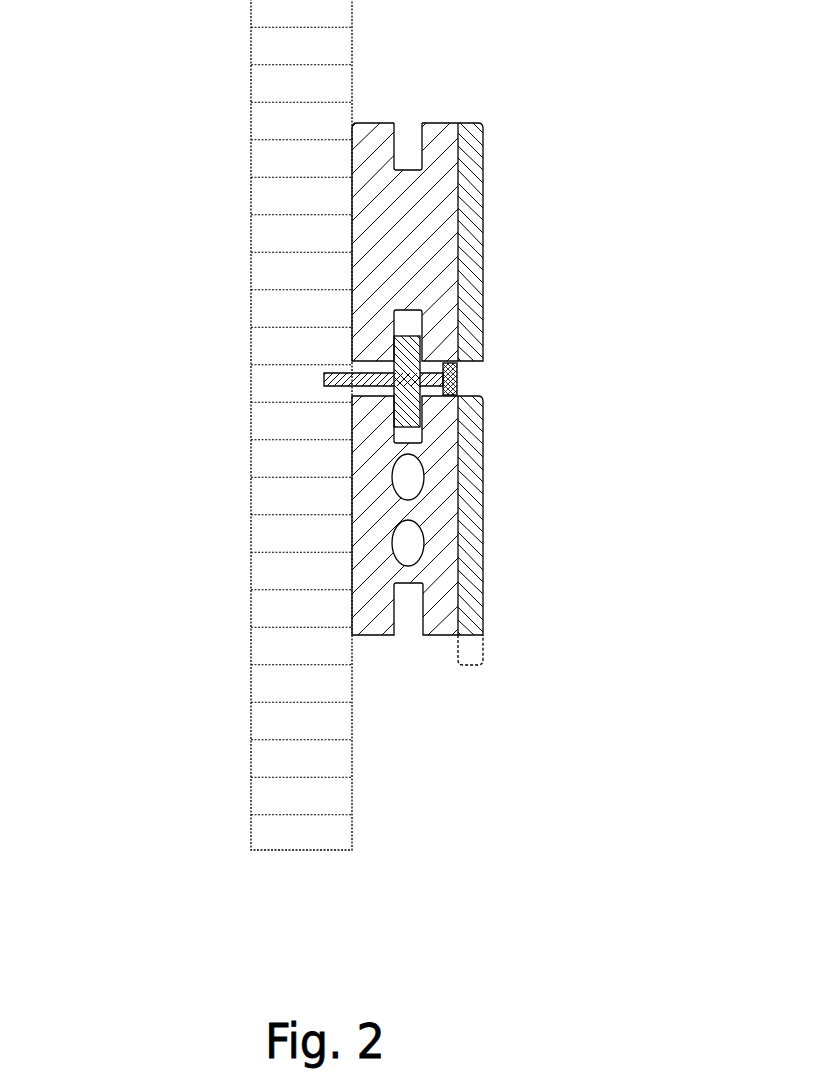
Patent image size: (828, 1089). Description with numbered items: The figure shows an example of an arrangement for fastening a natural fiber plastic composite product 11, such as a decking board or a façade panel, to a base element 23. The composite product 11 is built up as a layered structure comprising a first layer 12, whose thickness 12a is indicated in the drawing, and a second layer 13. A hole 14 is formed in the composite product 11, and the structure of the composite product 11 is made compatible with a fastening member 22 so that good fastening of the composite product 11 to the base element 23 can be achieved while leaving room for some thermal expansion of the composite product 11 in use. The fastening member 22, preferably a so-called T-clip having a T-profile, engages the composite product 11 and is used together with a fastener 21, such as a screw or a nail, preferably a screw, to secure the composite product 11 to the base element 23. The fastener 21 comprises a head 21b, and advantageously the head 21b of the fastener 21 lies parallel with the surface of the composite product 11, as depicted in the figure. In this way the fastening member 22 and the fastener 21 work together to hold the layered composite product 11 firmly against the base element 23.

The natural fiber plastic composite product 11 is at (352, 366).
The first layer 12 is at (474, 379).
The thickness of the first layer 12a is at (471, 681).
The second layer 13 is at (409, 87).
The hole 14 is at (239, 553).
The fastener 21 is at (462, 434).
The head of the fastener 21b is at (546, 362).
The fastening member 22 is at (278, 336).
The base element 23 is at (381, 425).